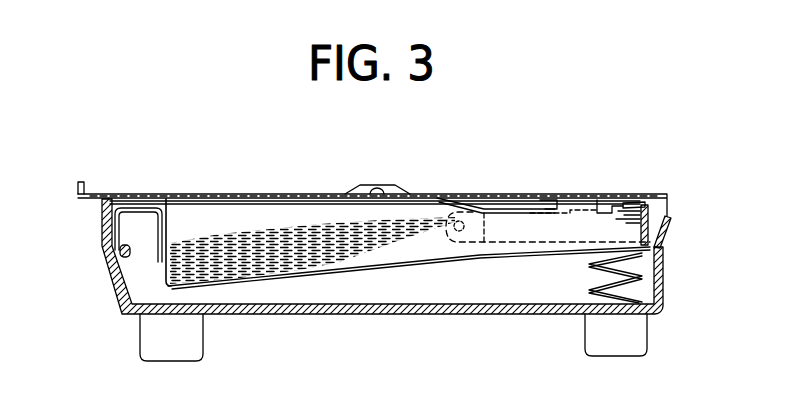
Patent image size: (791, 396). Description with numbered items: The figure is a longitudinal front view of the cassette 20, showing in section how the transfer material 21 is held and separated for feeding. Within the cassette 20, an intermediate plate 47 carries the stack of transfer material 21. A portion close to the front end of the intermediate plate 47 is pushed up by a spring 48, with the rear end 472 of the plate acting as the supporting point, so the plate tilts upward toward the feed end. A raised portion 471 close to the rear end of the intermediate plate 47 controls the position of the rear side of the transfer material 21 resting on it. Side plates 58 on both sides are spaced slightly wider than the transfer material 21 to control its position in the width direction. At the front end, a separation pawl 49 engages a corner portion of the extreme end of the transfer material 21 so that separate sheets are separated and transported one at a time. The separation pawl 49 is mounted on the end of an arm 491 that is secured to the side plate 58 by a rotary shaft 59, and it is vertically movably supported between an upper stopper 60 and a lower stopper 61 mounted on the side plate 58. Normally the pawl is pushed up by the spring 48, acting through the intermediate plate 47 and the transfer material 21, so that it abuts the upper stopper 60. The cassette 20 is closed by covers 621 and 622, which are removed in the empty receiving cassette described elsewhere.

The cassette 20 is at (126, 316).
The transfer material 21 is at (265, 243).
The intermediate plate 47 is at (377, 268).
The raised portion 471 is at (162, 199).
The rear end 472 is at (121, 258).
The spring 48 is at (598, 285).
The separation pawl 49 is at (657, 212).
The arm 491 is at (485, 242).
The side plate 58 is at (216, 200).
The rotary shaft 59 is at (468, 207).
The upper stopper 60 is at (603, 201).
The lower stopper 61 is at (660, 233).
The cover 621 is at (460, 197).
The cover 622 is at (307, 196).